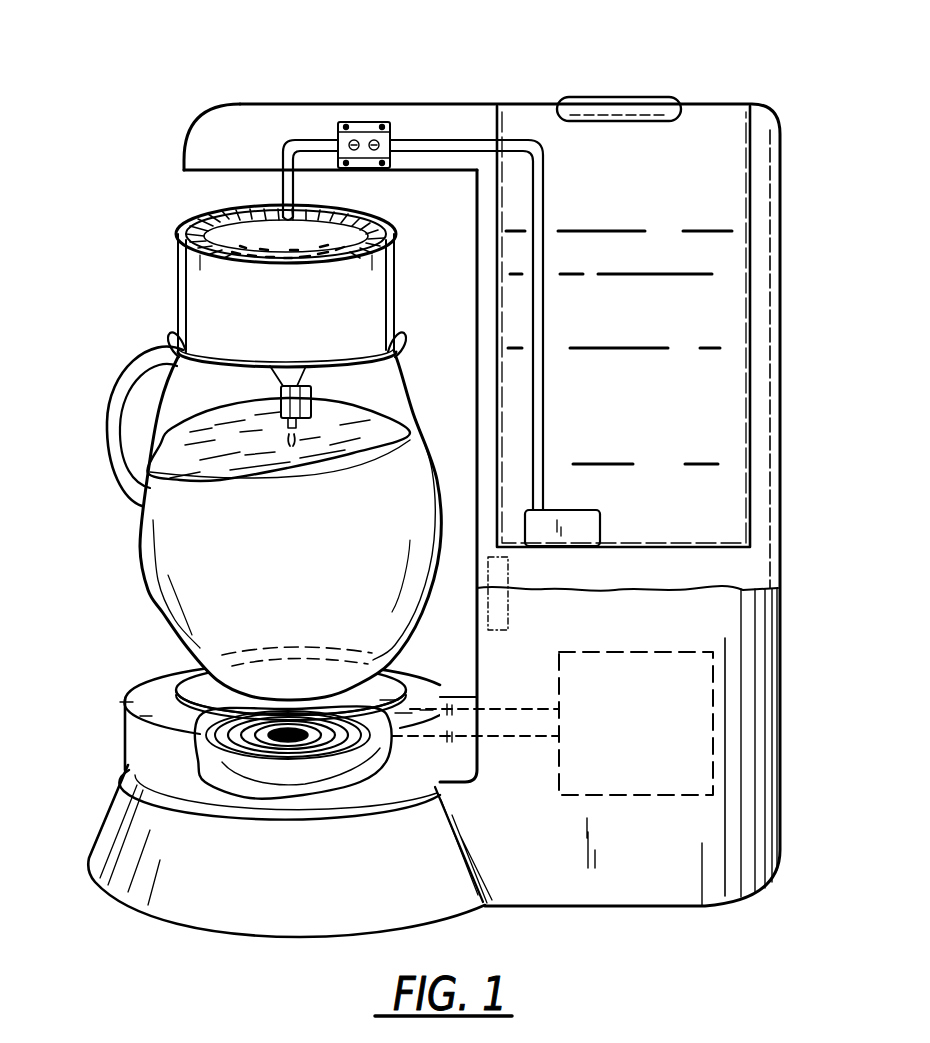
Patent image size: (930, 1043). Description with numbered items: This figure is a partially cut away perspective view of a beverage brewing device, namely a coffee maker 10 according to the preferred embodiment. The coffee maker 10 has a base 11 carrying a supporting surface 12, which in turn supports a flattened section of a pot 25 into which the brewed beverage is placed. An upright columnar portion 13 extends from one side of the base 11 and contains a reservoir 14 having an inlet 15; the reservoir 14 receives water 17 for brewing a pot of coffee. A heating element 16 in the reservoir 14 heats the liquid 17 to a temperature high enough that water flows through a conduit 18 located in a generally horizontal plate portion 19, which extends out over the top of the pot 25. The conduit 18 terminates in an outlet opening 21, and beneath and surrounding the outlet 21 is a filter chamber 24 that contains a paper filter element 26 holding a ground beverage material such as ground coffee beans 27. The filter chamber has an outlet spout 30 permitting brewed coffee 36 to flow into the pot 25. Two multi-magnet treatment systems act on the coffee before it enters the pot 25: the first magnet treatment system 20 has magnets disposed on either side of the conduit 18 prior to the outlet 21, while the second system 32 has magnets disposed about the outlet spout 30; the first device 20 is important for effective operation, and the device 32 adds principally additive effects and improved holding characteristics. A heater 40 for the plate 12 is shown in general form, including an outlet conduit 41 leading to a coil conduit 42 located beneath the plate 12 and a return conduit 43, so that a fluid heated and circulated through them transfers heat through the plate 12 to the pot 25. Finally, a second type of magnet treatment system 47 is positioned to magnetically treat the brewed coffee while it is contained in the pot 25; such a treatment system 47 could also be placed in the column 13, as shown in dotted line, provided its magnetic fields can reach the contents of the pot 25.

The coffee maker 10 is at (140, 274).
The base 11 is at (130, 733).
The supporting surface 12 is at (183, 690).
The upright columnar portion 13 is at (790, 536).
The reservoir 14 is at (752, 312).
The inlet 15 is at (664, 110).
The heating element 16 is at (582, 515).
The water 17 is at (712, 232).
The conduit 18 is at (460, 140).
The horizontal plate portion 19 is at (232, 108).
The first magnet treatment system 20 is at (365, 122).
The outlet opening 21 is at (300, 203).
The filter chamber 24 is at (393, 258).
The pot 25 is at (128, 559).
The paper filter element 26 is at (360, 222).
The ground coffee beans 27 is at (240, 228).
The outlet spout 30 is at (300, 432).
The second magnet treatment system 32 is at (333, 390).
The brewed coffee 36 is at (288, 436).
The heater 40 is at (713, 681).
The outlet conduit 41 is at (510, 742).
The coil conduit 42 is at (215, 742).
The return conduit 43 is at (505, 705).
The second type of magnet treatment system 47 is at (242, 752).